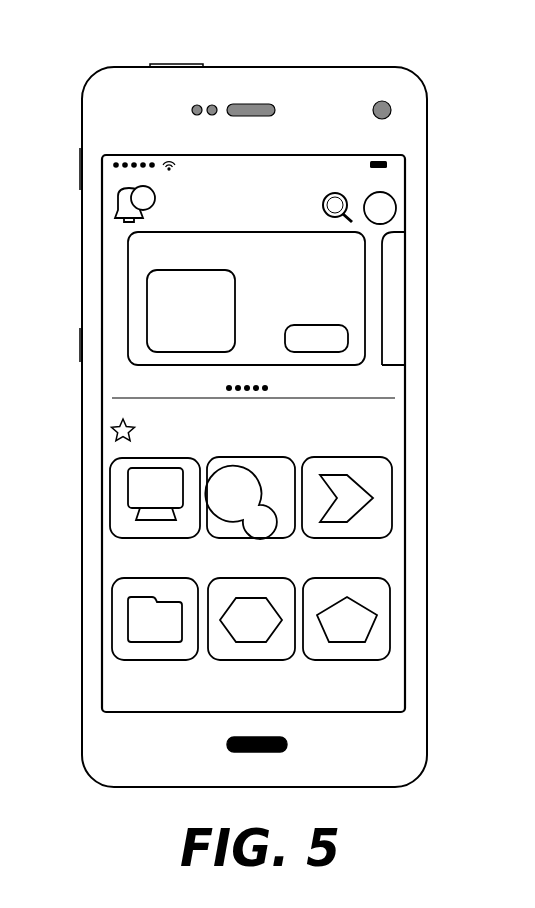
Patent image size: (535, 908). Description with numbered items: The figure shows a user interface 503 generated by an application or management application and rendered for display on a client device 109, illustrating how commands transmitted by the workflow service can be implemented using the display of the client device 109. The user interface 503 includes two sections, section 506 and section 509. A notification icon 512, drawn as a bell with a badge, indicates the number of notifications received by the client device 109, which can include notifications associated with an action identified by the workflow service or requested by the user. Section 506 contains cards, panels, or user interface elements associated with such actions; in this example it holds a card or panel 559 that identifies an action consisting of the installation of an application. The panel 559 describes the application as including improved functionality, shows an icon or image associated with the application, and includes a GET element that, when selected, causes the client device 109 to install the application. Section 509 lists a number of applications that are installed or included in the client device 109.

The client device 109 is at (340, 68).
The notification icon 512 is at (113, 207).
The section 506 is at (217, 311).
The card or panel 559 is at (246, 298).
The user interface 503 is at (393, 398).
The section 509 is at (118, 450).